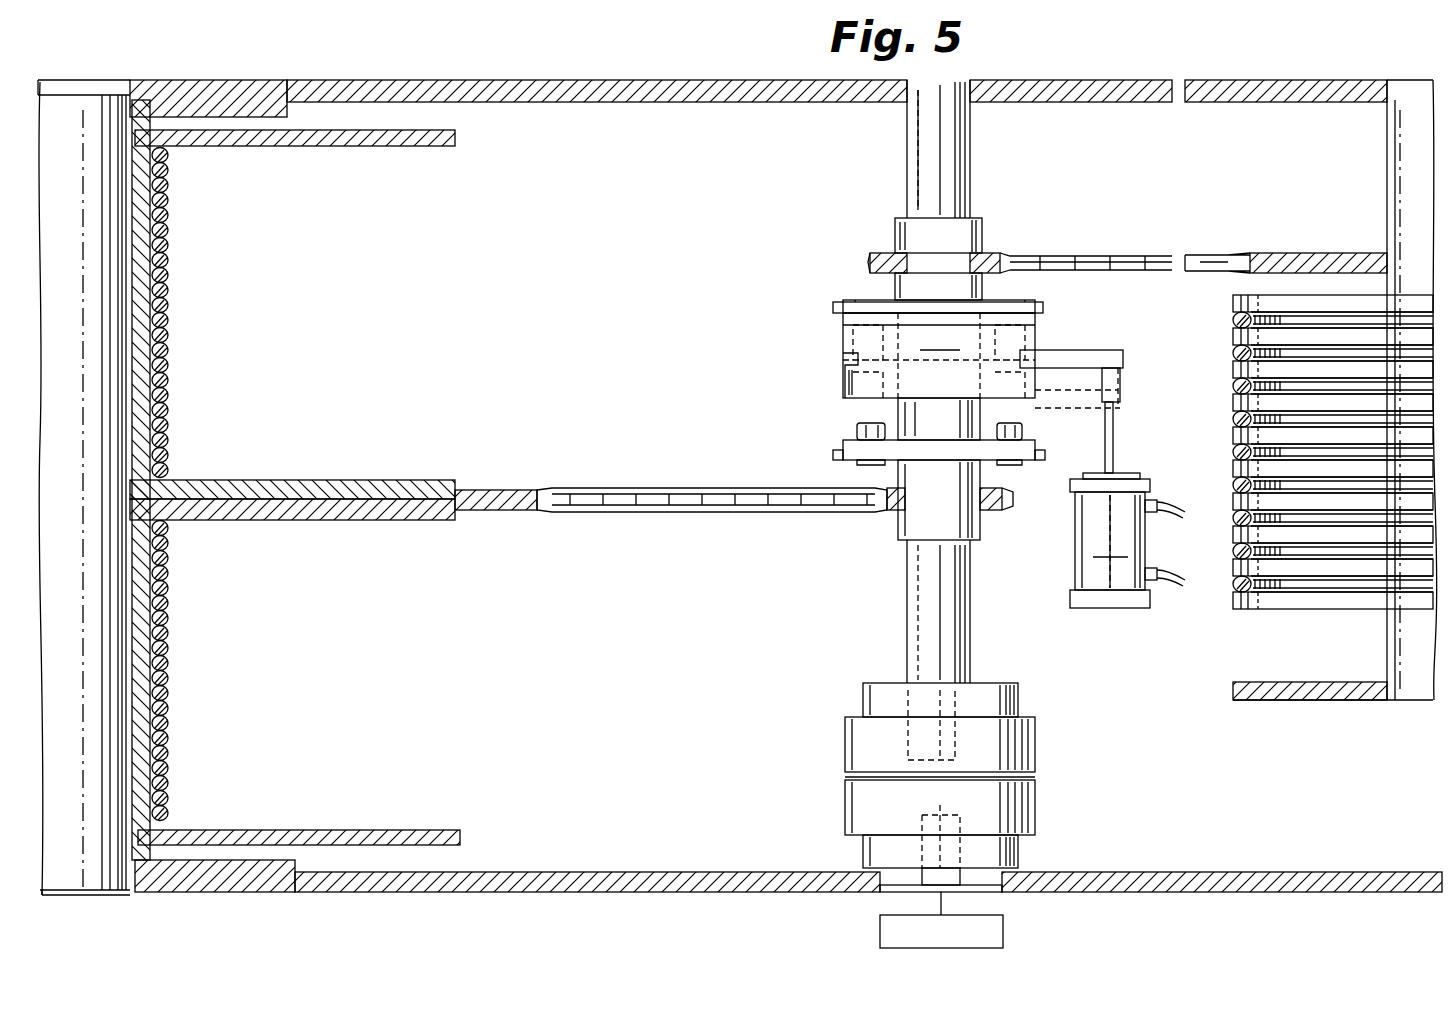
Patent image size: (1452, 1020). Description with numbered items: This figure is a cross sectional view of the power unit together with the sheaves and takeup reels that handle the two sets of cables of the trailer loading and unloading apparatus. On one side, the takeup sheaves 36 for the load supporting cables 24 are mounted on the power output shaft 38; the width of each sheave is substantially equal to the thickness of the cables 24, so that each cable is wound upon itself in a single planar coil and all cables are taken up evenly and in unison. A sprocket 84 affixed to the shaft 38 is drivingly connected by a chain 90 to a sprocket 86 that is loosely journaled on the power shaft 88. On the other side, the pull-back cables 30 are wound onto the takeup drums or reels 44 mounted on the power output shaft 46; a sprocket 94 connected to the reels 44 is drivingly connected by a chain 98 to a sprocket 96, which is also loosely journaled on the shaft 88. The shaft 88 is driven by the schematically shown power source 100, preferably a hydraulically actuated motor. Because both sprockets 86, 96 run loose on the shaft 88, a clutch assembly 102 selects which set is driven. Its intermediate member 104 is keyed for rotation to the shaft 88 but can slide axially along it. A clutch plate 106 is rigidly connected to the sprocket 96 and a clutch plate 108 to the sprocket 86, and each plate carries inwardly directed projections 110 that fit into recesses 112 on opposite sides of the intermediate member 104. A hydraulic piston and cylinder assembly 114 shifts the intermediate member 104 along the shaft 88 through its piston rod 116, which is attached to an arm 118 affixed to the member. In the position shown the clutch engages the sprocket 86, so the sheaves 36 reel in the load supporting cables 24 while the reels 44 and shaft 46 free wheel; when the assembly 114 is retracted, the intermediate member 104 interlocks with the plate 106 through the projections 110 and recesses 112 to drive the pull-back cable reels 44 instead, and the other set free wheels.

The load supporting cables 24 is at (1232, 354).
The pull-back cables 30 is at (170, 283).
The takeup sheaves 36 is at (1318, 610).
The power output shaft 38 is at (1412, 700).
The takeup drums or reels 44 is at (340, 147).
The power output shaft 46 is at (95, 472).
The sprocket 84 is at (1292, 256).
The sprocket 86 is at (884, 256).
The power shaft 88 is at (972, 148).
The chain 90 is at (1068, 253).
The sprocket 94 is at (505, 490).
The sprocket 96 is at (1003, 511).
The chain 98 is at (682, 490).
The power source 100 is at (880, 932).
The clutch assembly 102 is at (820, 300).
The intermediate member 104 is at (939, 355).
The clutch plate 106 is at (1033, 460).
The clutch plate 108 is at (1046, 304).
The projections 110 is at (857, 432).
The recesses 112 is at (845, 386).
The hydraulic piston and cylinder assembly 114 is at (1127, 540).
The piston rod 116 is at (1114, 432).
The arm 118 is at (1120, 350).